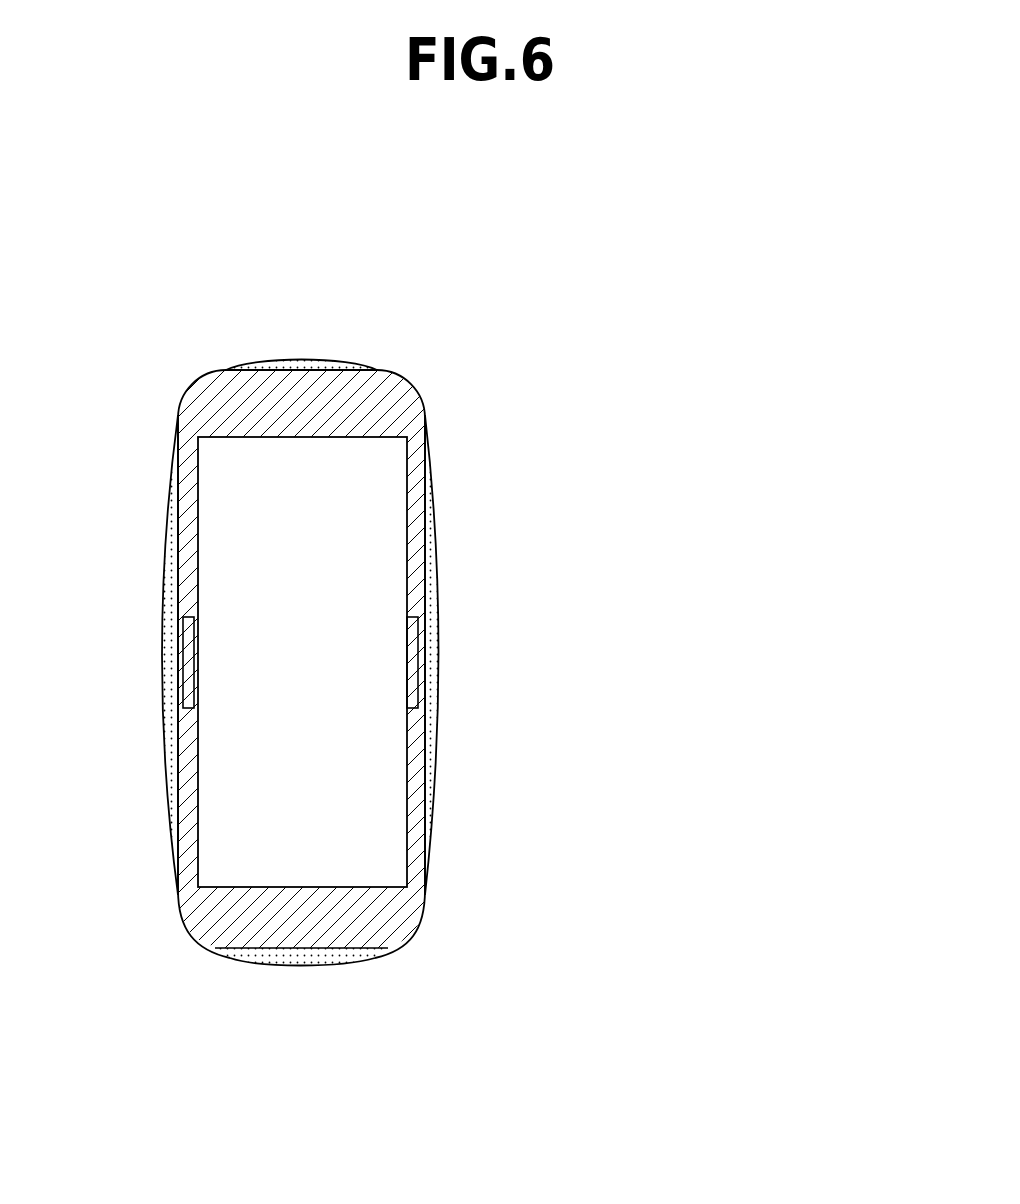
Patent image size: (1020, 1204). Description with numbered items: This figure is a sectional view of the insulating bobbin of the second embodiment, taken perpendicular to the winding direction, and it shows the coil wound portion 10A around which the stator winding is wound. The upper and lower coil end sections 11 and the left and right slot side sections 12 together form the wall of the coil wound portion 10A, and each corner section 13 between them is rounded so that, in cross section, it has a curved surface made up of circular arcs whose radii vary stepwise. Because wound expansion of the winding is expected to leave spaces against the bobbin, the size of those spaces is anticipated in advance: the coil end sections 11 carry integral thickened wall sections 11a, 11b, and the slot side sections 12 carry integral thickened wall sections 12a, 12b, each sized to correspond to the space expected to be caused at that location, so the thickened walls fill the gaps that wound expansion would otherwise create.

The coil wound portion 10A is at (738, 425).
The coil end section 11 is at (395, 347).
The thickened wall section 11a is at (278, 350).
The thickened wall section 11b is at (306, 973).
The slot side section 12 is at (453, 433).
The thickened wall section 12a is at (445, 639).
The thickened wall section 12b is at (155, 657).
The corner section 13 is at (424, 382).